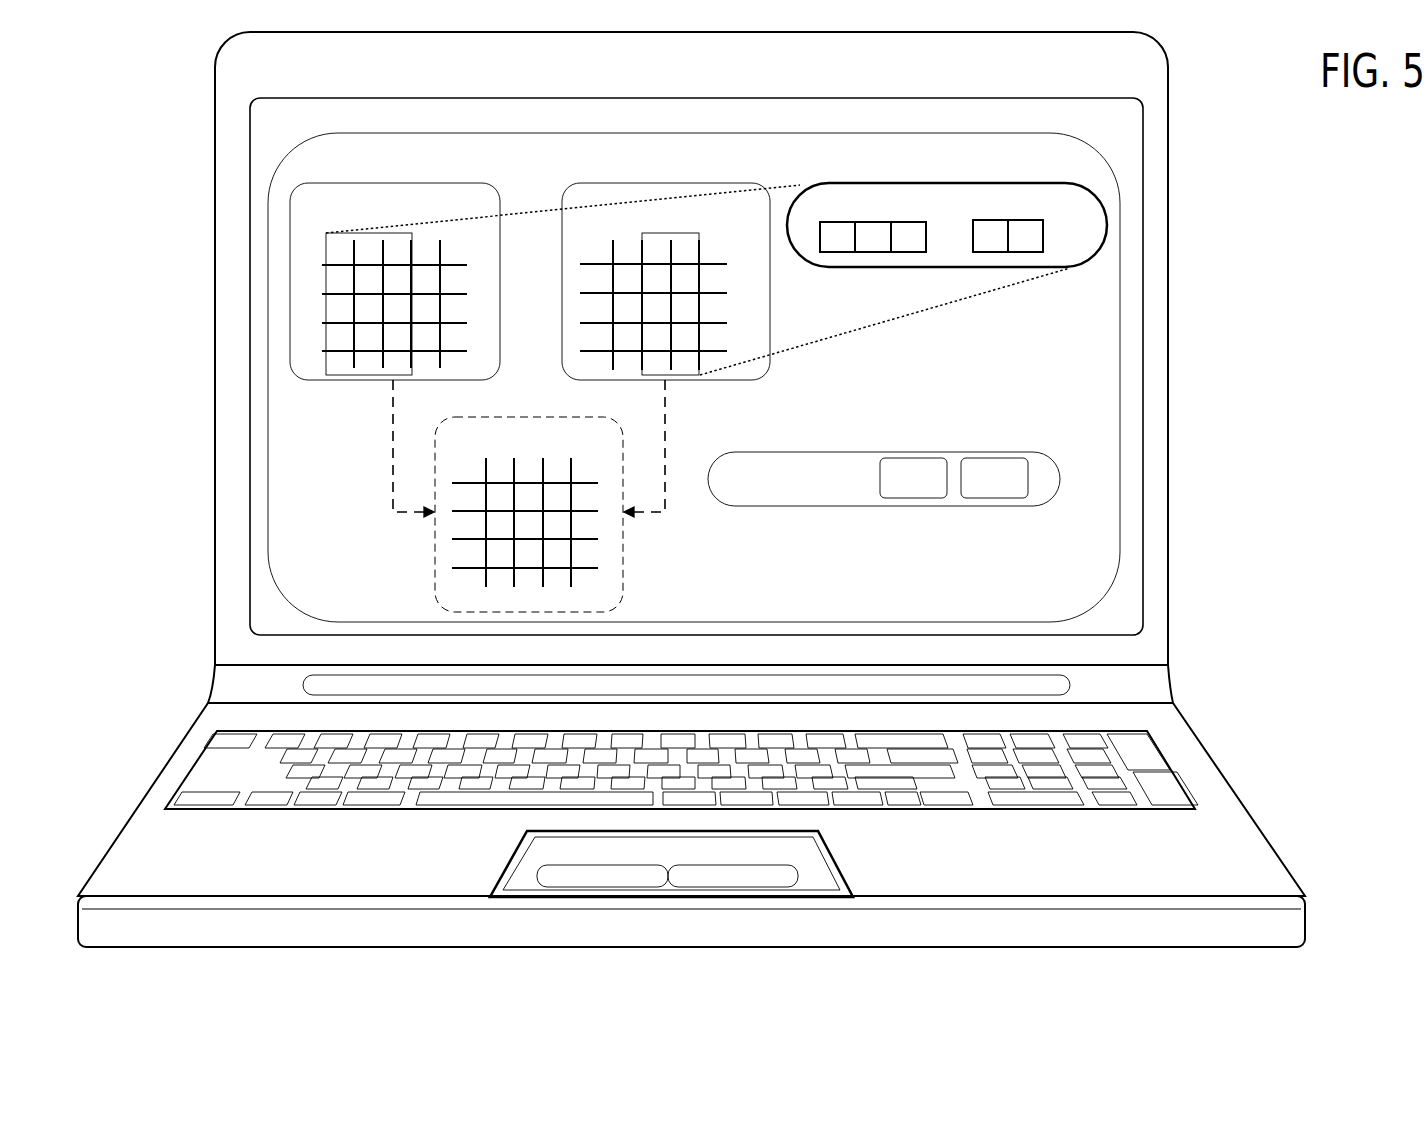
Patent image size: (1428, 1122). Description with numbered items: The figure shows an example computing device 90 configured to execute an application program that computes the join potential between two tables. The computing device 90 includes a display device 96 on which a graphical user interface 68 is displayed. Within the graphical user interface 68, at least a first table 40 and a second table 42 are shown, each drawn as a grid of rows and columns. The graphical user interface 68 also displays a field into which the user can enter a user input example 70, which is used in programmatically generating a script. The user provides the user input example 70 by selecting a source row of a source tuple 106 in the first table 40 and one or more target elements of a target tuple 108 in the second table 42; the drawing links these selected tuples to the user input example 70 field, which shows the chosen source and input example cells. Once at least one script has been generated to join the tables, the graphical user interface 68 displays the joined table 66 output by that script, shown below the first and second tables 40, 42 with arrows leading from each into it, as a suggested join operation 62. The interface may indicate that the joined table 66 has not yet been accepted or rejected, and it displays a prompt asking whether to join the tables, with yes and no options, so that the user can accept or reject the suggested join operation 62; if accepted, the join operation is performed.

The computing device 90 is at (1120, 82).
The display device 96 is at (1045, 127).
The graphical user interface 68 is at (1028, 607).
The first table 40 is at (470, 179).
The second table 42 is at (752, 179).
The source tuple 106 is at (492, 227).
The target tuple 108 is at (758, 227).
The user input example 70 is at (1065, 179).
The joined table 66 is at (615, 409).
The suggested join operation 62 is at (1045, 444).